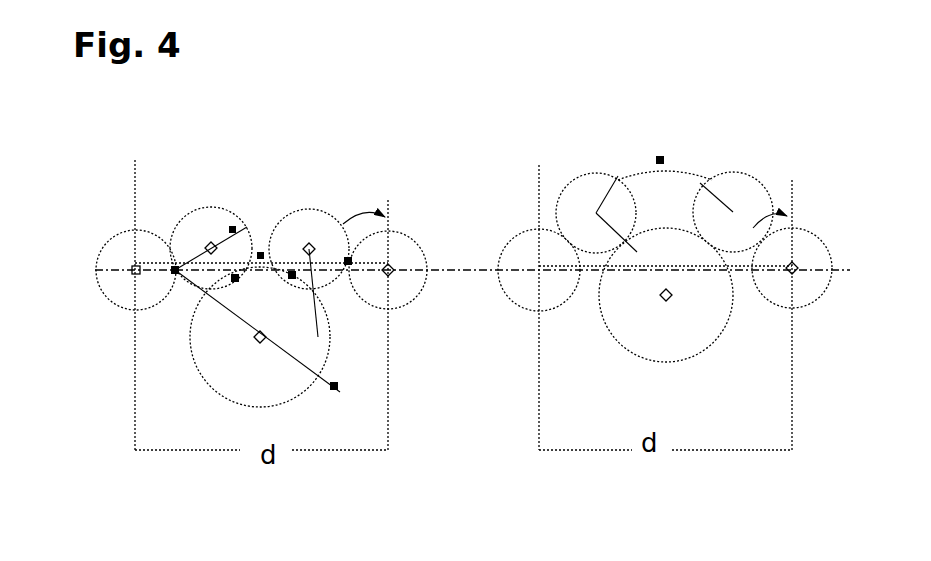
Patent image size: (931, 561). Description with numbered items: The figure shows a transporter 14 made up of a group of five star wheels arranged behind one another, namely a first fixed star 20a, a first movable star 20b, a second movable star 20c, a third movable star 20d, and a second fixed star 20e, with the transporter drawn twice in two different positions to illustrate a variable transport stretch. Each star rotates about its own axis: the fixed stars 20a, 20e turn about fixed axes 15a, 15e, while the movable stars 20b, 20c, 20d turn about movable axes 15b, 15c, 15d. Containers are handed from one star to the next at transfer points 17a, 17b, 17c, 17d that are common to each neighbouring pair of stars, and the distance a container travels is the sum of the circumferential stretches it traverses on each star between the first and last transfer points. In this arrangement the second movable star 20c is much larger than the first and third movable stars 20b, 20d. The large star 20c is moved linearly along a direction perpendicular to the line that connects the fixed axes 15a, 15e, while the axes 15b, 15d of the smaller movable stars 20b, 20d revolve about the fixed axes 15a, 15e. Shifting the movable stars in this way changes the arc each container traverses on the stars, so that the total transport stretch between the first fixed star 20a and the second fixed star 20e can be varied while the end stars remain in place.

The transporter 14 is at (274, 141).
The fixed axis of first fixed star 15a is at (136, 270).
The movable axis of first movable star 15b is at (211, 248).
The movable axis of second movable star 15c is at (260, 337).
The movable axis of third movable star 15d is at (309, 249).
The fixed axis of second fixed star 15e is at (388, 270).
The first transfer point 17a is at (175, 270).
The second transfer point 17b is at (235, 278).
The third transfer point 17c is at (292, 275).
The fourth transfer point 17d is at (348, 262).
The first fixed star 20a is at (123, 235).
The first movable star 20b is at (212, 210).
The second movable star 20c is at (273, 397).
The third movable star 20d is at (315, 210).
The second fixed star 20e is at (403, 238).